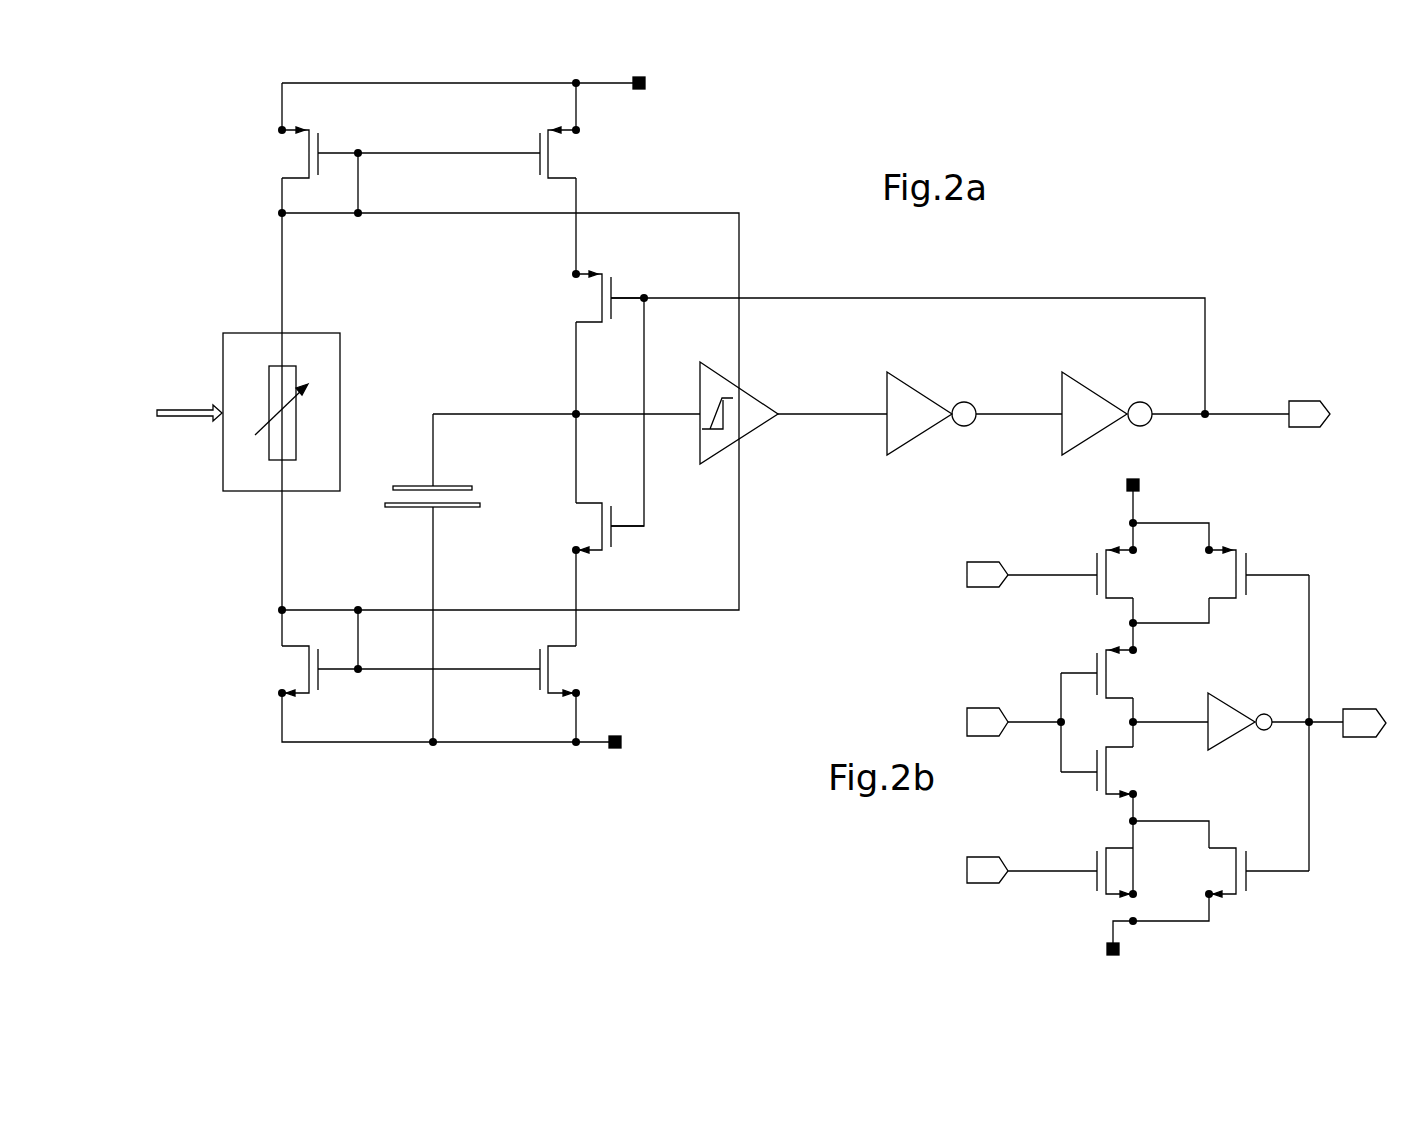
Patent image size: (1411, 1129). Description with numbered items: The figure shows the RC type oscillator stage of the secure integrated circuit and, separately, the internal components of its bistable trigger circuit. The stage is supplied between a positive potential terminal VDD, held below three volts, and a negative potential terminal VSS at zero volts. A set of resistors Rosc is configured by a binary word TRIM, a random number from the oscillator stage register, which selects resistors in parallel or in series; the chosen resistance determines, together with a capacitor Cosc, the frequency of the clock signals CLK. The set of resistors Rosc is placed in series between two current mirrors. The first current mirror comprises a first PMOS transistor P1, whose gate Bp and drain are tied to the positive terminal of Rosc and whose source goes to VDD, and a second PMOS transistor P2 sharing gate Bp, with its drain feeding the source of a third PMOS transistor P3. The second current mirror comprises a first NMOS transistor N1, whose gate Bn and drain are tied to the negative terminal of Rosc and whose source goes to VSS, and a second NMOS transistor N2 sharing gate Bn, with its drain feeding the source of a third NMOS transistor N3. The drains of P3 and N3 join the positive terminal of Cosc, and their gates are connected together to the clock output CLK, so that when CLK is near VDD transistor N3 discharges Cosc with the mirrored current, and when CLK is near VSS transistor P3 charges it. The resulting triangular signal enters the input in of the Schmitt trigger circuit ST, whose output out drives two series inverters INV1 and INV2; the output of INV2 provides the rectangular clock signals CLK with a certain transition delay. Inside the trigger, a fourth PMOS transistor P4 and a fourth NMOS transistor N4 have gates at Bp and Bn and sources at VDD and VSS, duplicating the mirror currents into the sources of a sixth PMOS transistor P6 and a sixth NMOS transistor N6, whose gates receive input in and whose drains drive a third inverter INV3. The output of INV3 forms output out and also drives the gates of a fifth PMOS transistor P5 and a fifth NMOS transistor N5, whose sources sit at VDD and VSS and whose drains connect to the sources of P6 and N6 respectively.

In FIG. 2A, the first PMOS transistor P1 is at (296, 152).
In FIG. 2A, the second PMOS transistor P2 is at (578, 152).
In FIG. 2A, the third PMOS transistor P3 is at (588, 296).
In FIG. 2A, the first NMOS transistor N1 is at (297, 671).
In FIG. 2A, the second NMOS transistor N2 is at (580, 671).
In FIG. 2A, the third NMOS transistor N3 is at (588, 528).
In FIG. 2A, the gate of first PMOS transistor Bp is at (440, 136).
In FIG. 2B, the gate of first PMOS transistor Bp is at (1025, 556).
In FIG. 2A, the gate of first NMOS transistor Bn is at (440, 621).
In FIG. 2B, the gate of first NMOS transistor Bn is at (1025, 854).
In FIG. 2A, the positive potential terminal VDD is at (665, 84).
In FIG. 2B, the positive potential terminal VDD is at (1159, 487).
In FIG. 2A, the negative potential terminal VSS is at (638, 742).
In FIG. 2B, the negative potential terminal VSS is at (1136, 949).
In FIG. 2A, the set of resistors Rosc is at (237, 486).
In FIG. 2A, the binary word TRIM is at (185, 403).
In FIG. 2A, the capacitor Cosc is at (442, 481).
In FIG. 2A, the bistable trigger circuit ST is at (752, 406).
In FIG. 2A, the input of bistable trigger circuit in is at (678, 395).
In FIG. 2B, the input of bistable trigger circuit in is at (987, 705).
In FIG. 2A, the output of bistable trigger circuit out is at (813, 395).
In FIG. 2B, the output of bistable trigger circuit out is at (1368, 706).
In FIG. 2A, the first inverter INV1 is at (906, 405).
In FIG. 2A, the second inverter INV2 is at (1076, 405).
In FIG. 2B, the third inverter INV3 is at (1222, 726).
In FIG. 2A, the clock signals CLK is at (1315, 401).
In FIG. 2B, the fourth PMOS transistor P4 is at (1091, 569).
In FIG. 2B, the fifth PMOS transistor P5 is at (1259, 569).
In FIG. 2B, the sixth PMOS transistor P6 is at (1116, 665).
In FIG. 2B, the fourth NMOS transistor N4 is at (1091, 878).
In FIG. 2B, the fifth NMOS transistor N5 is at (1259, 878).
In FIG. 2B, the sixth NMOS transistor N6 is at (1118, 776).